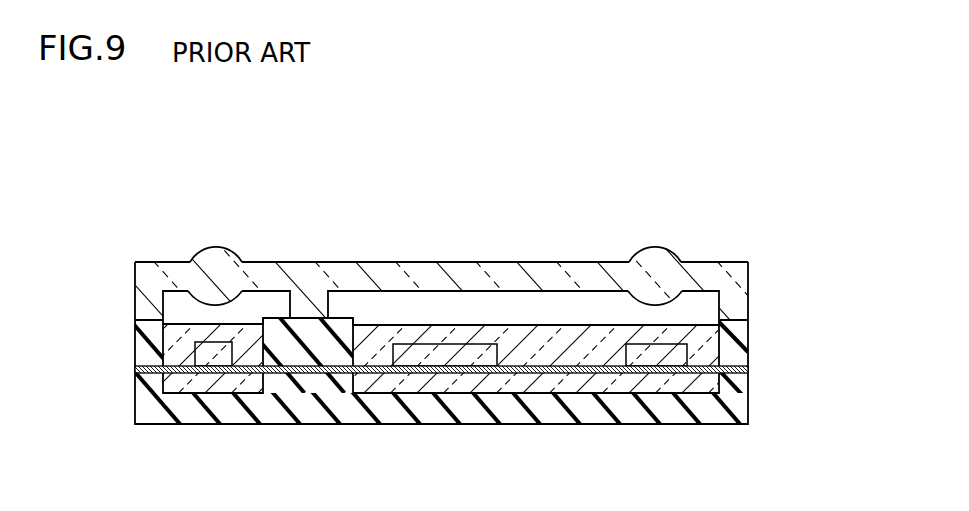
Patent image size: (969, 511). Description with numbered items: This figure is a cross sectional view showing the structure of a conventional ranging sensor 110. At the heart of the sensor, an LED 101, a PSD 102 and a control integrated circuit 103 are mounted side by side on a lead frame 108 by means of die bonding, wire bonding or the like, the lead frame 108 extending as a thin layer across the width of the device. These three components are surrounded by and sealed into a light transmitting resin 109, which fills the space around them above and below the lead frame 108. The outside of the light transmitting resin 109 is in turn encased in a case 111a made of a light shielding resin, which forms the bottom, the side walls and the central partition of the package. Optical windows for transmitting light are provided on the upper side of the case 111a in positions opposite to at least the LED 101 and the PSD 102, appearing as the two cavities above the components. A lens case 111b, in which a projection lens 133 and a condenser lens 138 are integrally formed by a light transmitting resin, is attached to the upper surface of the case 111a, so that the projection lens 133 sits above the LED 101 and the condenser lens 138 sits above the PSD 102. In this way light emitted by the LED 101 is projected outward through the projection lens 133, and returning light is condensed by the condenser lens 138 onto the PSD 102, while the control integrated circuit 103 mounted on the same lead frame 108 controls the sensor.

The solid-state imaging device (prior art) 110 is at (447, 223).
The lens case 111b is at (370, 263).
The case 111a is at (306, 408).
The projection lens 133 is at (216, 258).
The condenser lens 138 is at (652, 258).
The LED 101 is at (212, 353).
The PSD 102 is at (655, 352).
The control integrated circuit 103 is at (440, 353).
The lead frame 108 is at (560, 369).
The light transmitting resin 109 is at (178, 348).